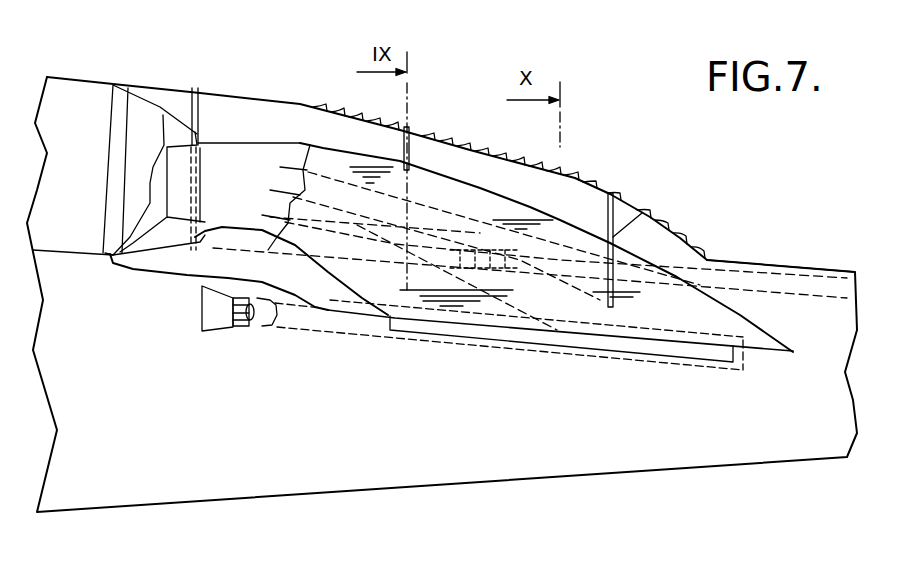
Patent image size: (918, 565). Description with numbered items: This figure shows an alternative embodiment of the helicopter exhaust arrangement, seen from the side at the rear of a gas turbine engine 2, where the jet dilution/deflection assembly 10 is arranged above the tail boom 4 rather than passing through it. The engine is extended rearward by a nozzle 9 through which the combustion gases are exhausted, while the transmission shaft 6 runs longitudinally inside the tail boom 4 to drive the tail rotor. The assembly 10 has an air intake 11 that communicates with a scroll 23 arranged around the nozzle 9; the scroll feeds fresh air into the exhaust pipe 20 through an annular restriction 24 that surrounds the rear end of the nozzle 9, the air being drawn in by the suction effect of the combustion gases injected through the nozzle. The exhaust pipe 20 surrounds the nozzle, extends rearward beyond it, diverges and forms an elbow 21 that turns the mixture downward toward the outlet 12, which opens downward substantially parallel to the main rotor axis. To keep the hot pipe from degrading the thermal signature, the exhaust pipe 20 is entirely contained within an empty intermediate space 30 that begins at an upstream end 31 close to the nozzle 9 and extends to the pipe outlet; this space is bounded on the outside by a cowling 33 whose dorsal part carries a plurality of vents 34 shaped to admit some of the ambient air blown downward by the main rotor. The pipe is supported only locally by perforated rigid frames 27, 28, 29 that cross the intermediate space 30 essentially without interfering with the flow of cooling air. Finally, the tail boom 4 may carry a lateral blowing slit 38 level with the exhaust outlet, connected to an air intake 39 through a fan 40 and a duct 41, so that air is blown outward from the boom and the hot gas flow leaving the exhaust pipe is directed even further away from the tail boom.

The gas turbine engine 2 is at (73, 103).
The tail boom 4 is at (778, 310).
The transmission shaft 6 is at (812, 283).
The nozzle 9 is at (198, 142).
The jet dilution/deflection assembly 10 is at (615, 191).
The air intake 11 is at (127, 155).
The outlet 12 is at (770, 355).
The exhaust pipe 20 is at (318, 147).
The elbow 21 is at (617, 254).
The scroll 23 is at (177, 128).
The annular restriction 24 is at (208, 148).
The perforated rigid frame 27 is at (198, 142).
The perforated rigid frame 28 is at (410, 133).
The perforated rigid frame 29 is at (613, 230).
The intermediate space 30 is at (227, 260).
The upstream end 31 is at (158, 258).
The cowling 33 is at (290, 294).
The vents 34 is at (597, 187).
The lateral blowing slit 38 is at (673, 352).
The air intake 39 is at (208, 325).
The fan 40 is at (258, 327).
The duct 41 is at (357, 326).